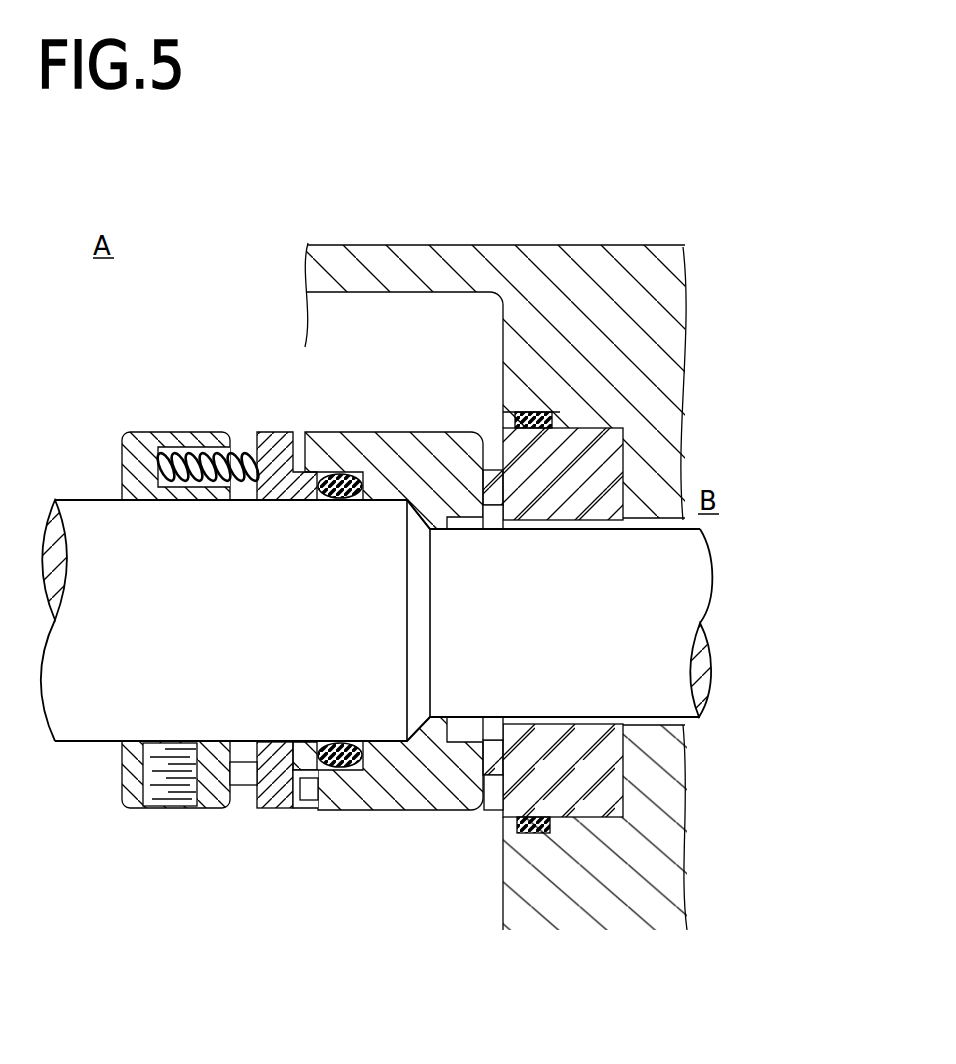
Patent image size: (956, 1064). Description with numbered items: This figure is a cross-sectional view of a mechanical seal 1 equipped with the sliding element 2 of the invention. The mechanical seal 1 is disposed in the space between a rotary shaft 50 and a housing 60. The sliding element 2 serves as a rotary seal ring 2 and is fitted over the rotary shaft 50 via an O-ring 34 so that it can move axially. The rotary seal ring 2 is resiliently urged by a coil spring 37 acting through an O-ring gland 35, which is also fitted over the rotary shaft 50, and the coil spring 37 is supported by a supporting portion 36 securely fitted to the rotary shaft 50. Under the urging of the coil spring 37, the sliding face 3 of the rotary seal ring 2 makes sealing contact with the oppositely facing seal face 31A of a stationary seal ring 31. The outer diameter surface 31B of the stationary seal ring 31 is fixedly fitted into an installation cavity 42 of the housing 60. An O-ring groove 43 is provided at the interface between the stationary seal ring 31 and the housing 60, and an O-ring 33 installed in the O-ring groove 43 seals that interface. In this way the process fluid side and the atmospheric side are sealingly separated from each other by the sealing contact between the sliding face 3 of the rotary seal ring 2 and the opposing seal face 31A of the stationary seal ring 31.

The mechanical seal 1 is at (605, 328).
The sliding element 2 is at (422, 782).
The sliding face 3 is at (497, 790).
The stationary seal ring 31 is at (568, 792).
The seal face 31A is at (452, 476).
The outer diameter surface 31B is at (572, 822).
The O-ring 33 is at (523, 413).
The O-ring 34 is at (343, 773).
The O-ring gland 35 is at (285, 443).
The supporting portion 36 is at (137, 436).
The coil spring 37 is at (236, 445).
The installation cavity 42 is at (650, 447).
The O-ring groove 43 is at (520, 426).
The rotary shaft 50 is at (100, 719).
The housing 60 is at (668, 400).